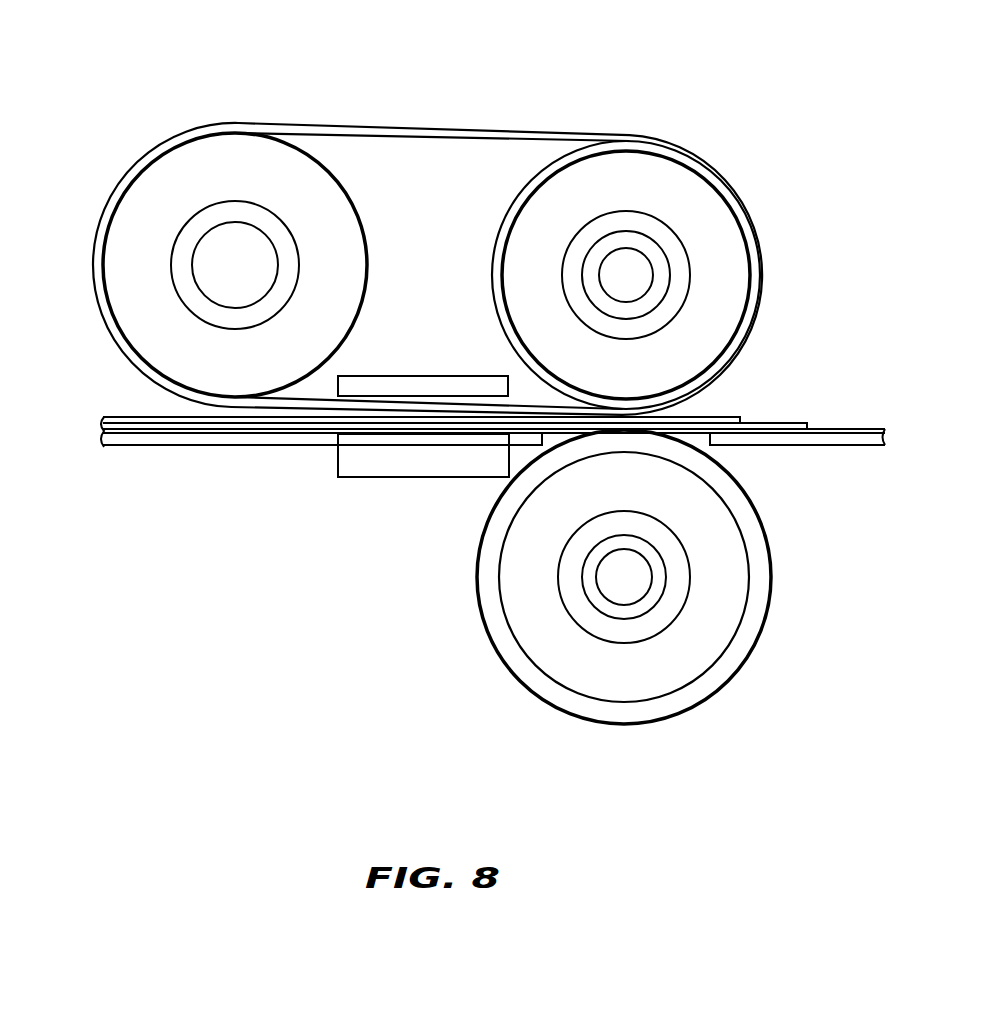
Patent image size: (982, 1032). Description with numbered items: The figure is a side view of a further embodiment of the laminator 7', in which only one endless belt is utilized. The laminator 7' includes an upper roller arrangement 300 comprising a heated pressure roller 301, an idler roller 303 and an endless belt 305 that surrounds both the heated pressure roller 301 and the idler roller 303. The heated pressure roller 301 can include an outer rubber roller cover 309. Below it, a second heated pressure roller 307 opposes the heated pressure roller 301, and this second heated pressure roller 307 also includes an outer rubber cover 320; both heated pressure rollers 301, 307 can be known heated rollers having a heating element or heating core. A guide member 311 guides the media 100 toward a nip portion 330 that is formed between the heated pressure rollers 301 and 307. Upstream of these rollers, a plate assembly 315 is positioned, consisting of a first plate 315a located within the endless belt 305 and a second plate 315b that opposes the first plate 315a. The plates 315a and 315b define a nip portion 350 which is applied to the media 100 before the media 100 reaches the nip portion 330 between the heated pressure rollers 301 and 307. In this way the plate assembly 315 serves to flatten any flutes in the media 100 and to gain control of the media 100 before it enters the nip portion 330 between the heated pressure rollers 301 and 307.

The laminator 7' is at (652, 61).
The upper roller arrangement 300 is at (458, 128).
The endless belt 305 is at (335, 125).
The idler roller 303 is at (148, 190).
The heated pressure roller 301 is at (683, 182).
The outer rubber roller cover 309 is at (738, 212).
The nip portion 330 is at (620, 412).
The outer rubber cover 320 is at (753, 532).
The second heated pressure roller 307 is at (720, 630).
The media 100 is at (148, 418).
The nip portion 350 is at (410, 432).
The guide member 311 is at (147, 447).
The plate assembly 315 is at (383, 441).
The first plate 315a is at (470, 375).
The second plate 315b is at (485, 478).